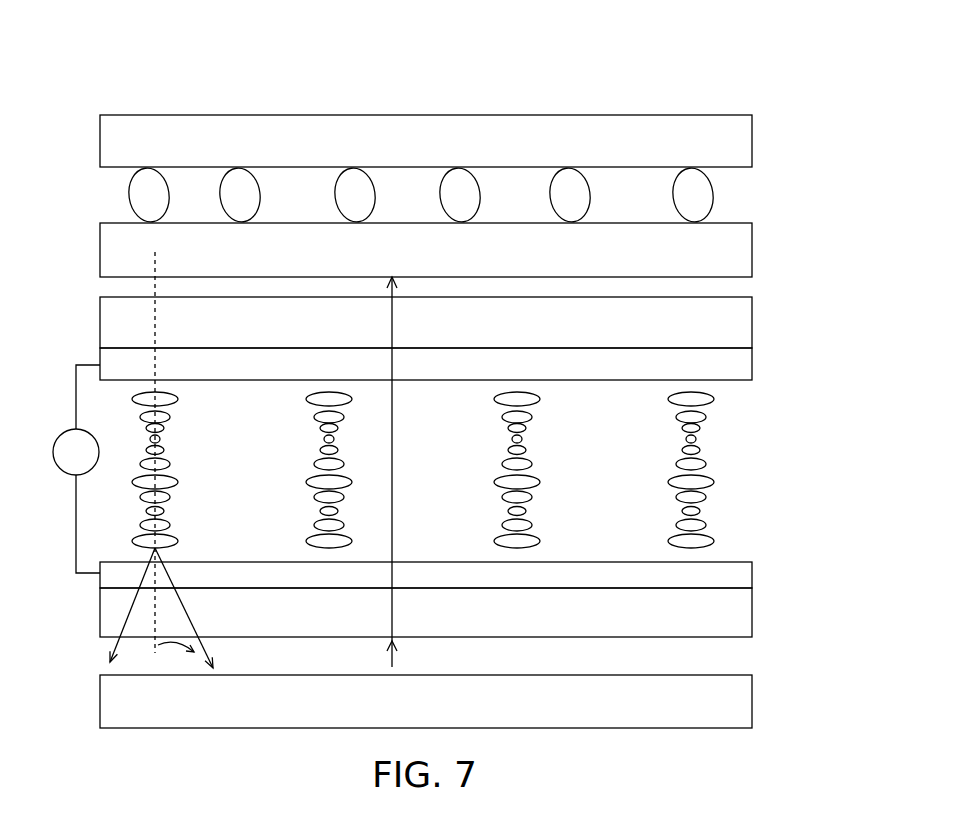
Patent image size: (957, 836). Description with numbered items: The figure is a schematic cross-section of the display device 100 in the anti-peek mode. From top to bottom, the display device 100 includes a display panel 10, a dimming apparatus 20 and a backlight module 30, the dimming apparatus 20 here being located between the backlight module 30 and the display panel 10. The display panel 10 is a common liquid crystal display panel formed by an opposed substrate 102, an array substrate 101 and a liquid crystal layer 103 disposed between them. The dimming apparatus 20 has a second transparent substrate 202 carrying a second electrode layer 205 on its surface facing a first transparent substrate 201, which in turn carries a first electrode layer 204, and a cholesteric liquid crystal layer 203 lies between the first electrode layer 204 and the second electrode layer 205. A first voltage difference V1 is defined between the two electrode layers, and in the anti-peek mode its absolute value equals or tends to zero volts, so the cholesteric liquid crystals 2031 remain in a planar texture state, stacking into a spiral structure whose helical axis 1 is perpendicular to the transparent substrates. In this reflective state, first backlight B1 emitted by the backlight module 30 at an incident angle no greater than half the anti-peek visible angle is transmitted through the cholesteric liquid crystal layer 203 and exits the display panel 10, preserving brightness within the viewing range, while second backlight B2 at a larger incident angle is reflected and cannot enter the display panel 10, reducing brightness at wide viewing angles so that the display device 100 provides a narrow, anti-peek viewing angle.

The display device 100 is at (448, 47).
The display panel 10 is at (86, 113).
The dimming apparatus 20 is at (86, 298).
The backlight module 30 is at (86, 669).
The array substrate 101 is at (738, 258).
The opposed substrate 102 is at (738, 148).
The liquid crystal layer 103 is at (700, 197).
The first transparent substrate 201 is at (738, 616).
The second transparent substrate 202 is at (738, 328).
The cholesteric liquid crystal layer 203 is at (752, 393).
The cholesteric liquid crystals 2031 is at (700, 547).
The first electrode layer 204 is at (738, 576).
The second electrode layer 205 is at (738, 362).
The first voltage difference V1 is at (76, 469).
The first backlight B1 is at (395, 650).
The second backlight B2 is at (212, 663).
The helical axis 1 is at (156, 648).